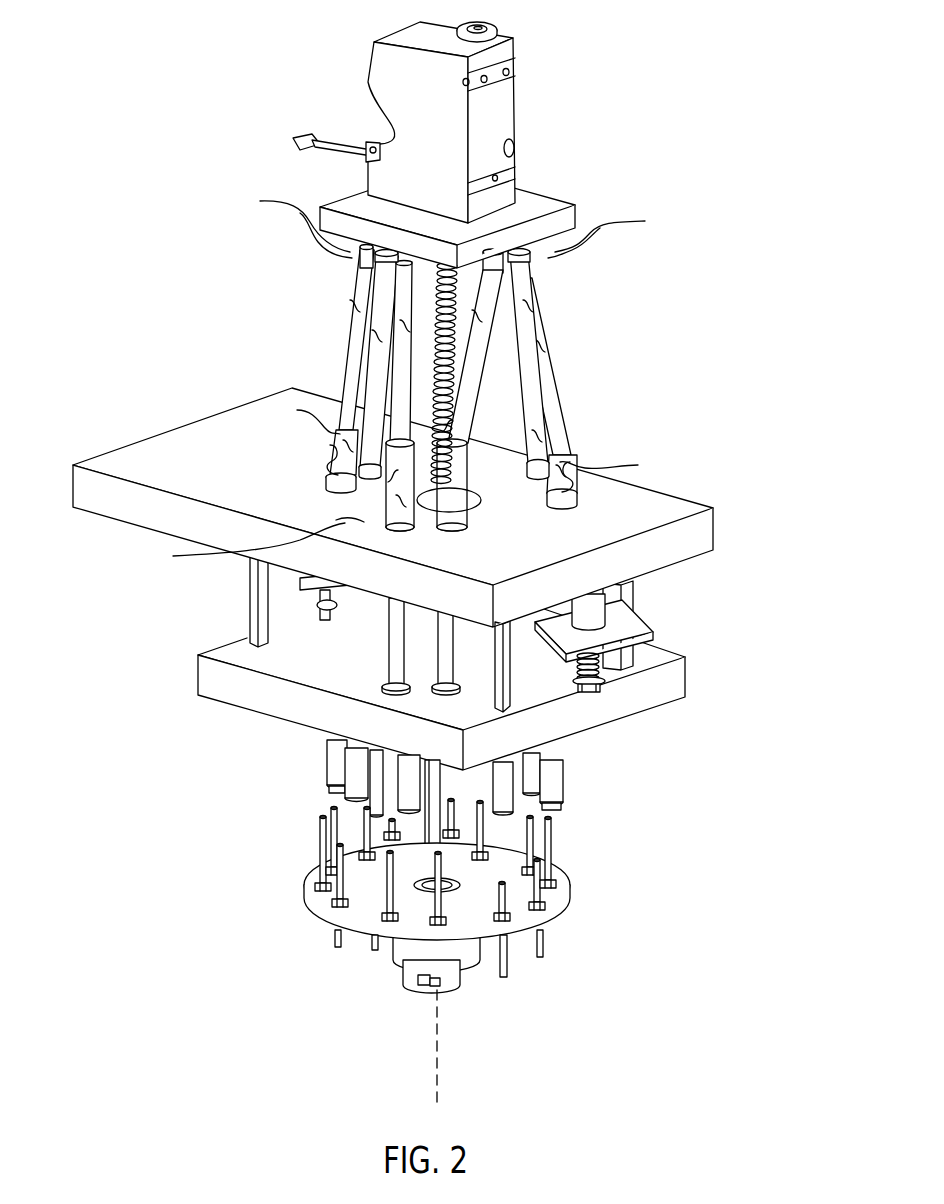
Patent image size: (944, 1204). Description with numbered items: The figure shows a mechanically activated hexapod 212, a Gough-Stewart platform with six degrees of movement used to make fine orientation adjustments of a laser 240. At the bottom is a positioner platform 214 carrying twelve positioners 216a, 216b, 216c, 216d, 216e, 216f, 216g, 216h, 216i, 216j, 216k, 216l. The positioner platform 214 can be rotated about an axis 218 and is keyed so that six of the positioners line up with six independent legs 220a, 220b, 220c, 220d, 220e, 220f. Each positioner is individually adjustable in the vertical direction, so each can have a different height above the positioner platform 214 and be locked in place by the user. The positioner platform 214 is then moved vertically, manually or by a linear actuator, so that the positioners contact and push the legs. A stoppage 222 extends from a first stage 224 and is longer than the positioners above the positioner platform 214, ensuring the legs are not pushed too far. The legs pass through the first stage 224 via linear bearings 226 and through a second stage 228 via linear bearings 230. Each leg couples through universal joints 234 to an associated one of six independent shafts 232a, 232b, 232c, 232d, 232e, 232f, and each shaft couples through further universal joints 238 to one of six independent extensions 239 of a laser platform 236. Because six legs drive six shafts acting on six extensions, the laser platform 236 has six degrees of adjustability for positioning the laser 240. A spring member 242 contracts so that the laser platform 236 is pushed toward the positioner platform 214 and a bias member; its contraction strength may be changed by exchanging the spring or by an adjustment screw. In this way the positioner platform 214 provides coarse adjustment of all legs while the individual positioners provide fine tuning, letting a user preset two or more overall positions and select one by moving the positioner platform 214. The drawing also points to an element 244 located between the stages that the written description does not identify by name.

The mechanically activated hexapod 212 is at (126, 74).
The positioner platform 214 is at (558, 897).
The positioner 216a is at (372, 862).
The positioner 216b is at (453, 838).
The positioner 216c is at (503, 905).
The positioner 216d is at (560, 908).
The positioner 216e is at (545, 870).
The positioner 216f is at (555, 860).
The positioner 216g is at (540, 832).
The positioner 216h is at (413, 825).
The positioner 216i is at (355, 910).
The positioner 216j is at (325, 833).
The positioner 216k is at (320, 860).
The positioner 216l is at (325, 905).
The axis 218 is at (437, 1076).
The leg 220a is at (400, 815).
The leg 220b is at (442, 900).
The leg 220c is at (563, 783).
The leg 220d is at (558, 772).
The leg 220e is at (352, 776).
The leg 220f is at (328, 762).
The stoppage 222 is at (365, 790).
The first stage 224 is at (684, 682).
The linear bearings 226 is at (330, 645).
The second stage 228 is at (716, 534).
The linear bearings 230 is at (340, 490).
The shaft 232a is at (372, 392).
The shaft 232b is at (545, 405).
The shaft 232c is at (492, 388).
The shaft 232d is at (517, 368).
The shaft 232e is at (417, 327).
The shaft 232f is at (352, 377).
The universal joints 234 is at (404, 484).
The laser platform 236 is at (573, 217).
The universal joints 238 is at (532, 254).
The extensions 239 is at (450, 224).
The laser 240 is at (514, 99).
The spring member 242 is at (462, 336).
The preload mechanism 244 is at (668, 624).